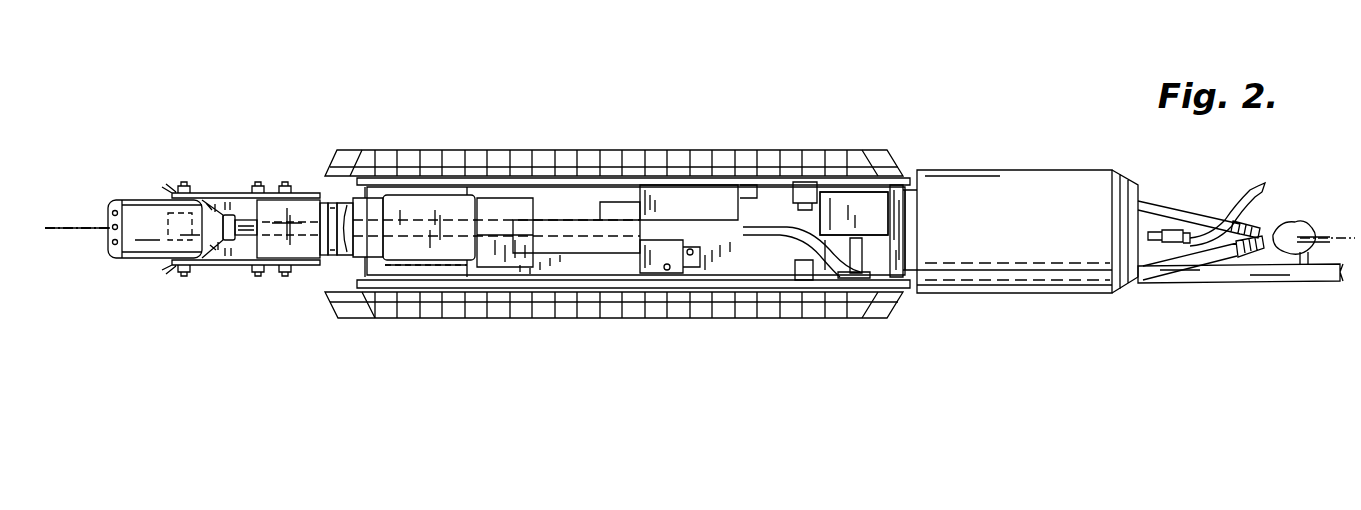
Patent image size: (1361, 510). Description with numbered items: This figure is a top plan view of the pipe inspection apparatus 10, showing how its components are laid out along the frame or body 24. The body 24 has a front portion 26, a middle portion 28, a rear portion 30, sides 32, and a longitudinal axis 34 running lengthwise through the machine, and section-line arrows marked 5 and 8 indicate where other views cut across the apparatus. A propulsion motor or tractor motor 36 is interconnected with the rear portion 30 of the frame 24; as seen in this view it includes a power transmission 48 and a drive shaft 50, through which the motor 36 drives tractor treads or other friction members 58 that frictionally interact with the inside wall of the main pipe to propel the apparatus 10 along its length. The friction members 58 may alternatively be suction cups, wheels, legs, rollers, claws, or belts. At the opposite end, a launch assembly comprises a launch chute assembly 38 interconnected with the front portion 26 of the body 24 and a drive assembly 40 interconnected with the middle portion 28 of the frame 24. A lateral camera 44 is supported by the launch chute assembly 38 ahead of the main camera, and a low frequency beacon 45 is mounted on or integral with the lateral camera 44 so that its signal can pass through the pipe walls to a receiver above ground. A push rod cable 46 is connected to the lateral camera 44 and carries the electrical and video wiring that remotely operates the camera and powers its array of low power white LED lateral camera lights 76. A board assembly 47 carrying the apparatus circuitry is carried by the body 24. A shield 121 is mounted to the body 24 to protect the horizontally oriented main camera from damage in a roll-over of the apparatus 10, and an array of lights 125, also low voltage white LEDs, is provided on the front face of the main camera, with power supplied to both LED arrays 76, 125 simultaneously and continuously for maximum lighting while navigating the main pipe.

The apparatus 10 is at (745, 88).
The frame or body 24 is at (578, 196).
The front portion 26 is at (364, 108).
The middle portion 28 is at (562, 115).
The rear portion 30 is at (875, 100).
The sides 32 is at (930, 151).
The longitudinal axis 34 is at (65, 218).
The propulsion motor 36 is at (1093, 173).
The launch chute assembly 38 is at (218, 296).
The drive assembly 40 is at (598, 245).
The lateral camera 44 is at (147, 203).
The low frequency beacon 45 is at (190, 225).
The push rod cable 46 is at (1303, 270).
The board assembly 47 is at (528, 262).
The power transmission 48 is at (870, 190).
The drive shaft 50 is at (855, 280).
The friction members 58 is at (674, 150).
The lateral camera lights 76 is at (111, 250).
The shield 121 is at (449, 250).
The array of lights 125 is at (345, 250).
The section line 5 is at (494, 232).
The section line 8 is at (88, 228).